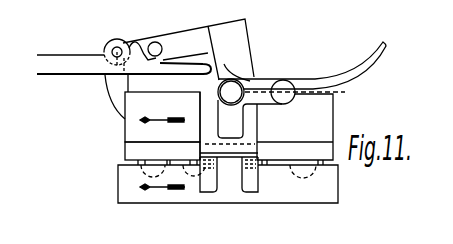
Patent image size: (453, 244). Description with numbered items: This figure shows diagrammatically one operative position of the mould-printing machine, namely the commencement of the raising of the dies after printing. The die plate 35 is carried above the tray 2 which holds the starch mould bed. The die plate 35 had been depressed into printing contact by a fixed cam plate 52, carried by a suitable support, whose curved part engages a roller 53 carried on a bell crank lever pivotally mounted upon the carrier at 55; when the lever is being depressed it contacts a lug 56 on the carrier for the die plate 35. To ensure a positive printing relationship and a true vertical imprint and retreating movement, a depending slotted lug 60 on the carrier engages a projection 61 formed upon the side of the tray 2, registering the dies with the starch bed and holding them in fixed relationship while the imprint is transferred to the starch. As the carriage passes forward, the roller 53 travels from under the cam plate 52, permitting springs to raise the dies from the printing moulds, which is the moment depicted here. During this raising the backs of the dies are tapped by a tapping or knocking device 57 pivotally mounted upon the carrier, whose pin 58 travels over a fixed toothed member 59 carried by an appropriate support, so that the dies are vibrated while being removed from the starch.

The tray 2 is at (125, 180).
The die plate 35 is at (133, 152).
The fixed cam plate 52 is at (353, 72).
The roller 53 is at (252, 80).
The pivot of bell crank lever 55 is at (297, 94).
The lug 56 is at (220, 146).
The tapping or knocking device 57 is at (238, 28).
The pin 58 is at (152, 46).
The fixed toothed member 59 is at (73, 62).
The depending slotted lug 60 is at (258, 189).
The projection 61 is at (227, 190).